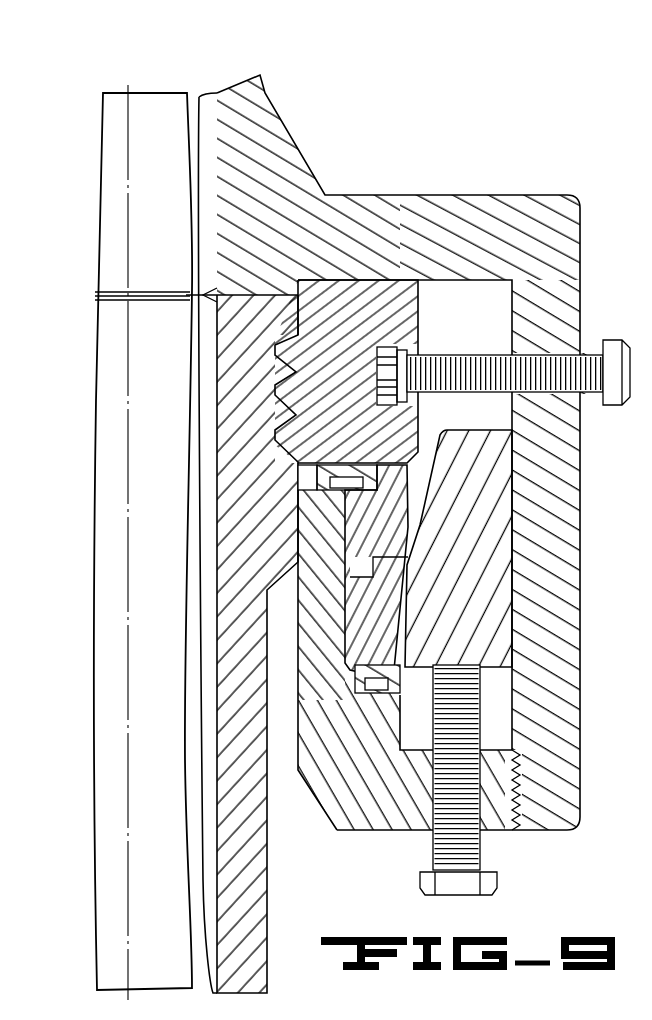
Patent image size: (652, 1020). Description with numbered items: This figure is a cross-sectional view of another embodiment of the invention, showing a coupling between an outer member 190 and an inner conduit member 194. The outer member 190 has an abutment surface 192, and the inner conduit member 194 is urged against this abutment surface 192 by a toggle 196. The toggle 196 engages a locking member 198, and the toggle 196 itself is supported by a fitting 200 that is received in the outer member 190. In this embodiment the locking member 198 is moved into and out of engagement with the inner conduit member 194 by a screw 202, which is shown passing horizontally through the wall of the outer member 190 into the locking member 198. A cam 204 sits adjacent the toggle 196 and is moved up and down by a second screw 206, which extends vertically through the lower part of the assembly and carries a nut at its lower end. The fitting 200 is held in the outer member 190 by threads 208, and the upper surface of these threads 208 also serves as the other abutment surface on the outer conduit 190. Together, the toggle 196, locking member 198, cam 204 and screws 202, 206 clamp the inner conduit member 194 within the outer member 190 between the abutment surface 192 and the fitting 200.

The outer member 190 is at (466, 190).
The abutment surface 192 is at (243, 287).
The inner conduit member 194 is at (267, 875).
The toggle 196 is at (406, 522).
The locking member 198 is at (358, 385).
The fitting 200 is at (337, 795).
The screw 202 is at (557, 358).
The cam 204 is at (482, 601).
The screw 206 is at (481, 850).
The threads 208 is at (517, 785).